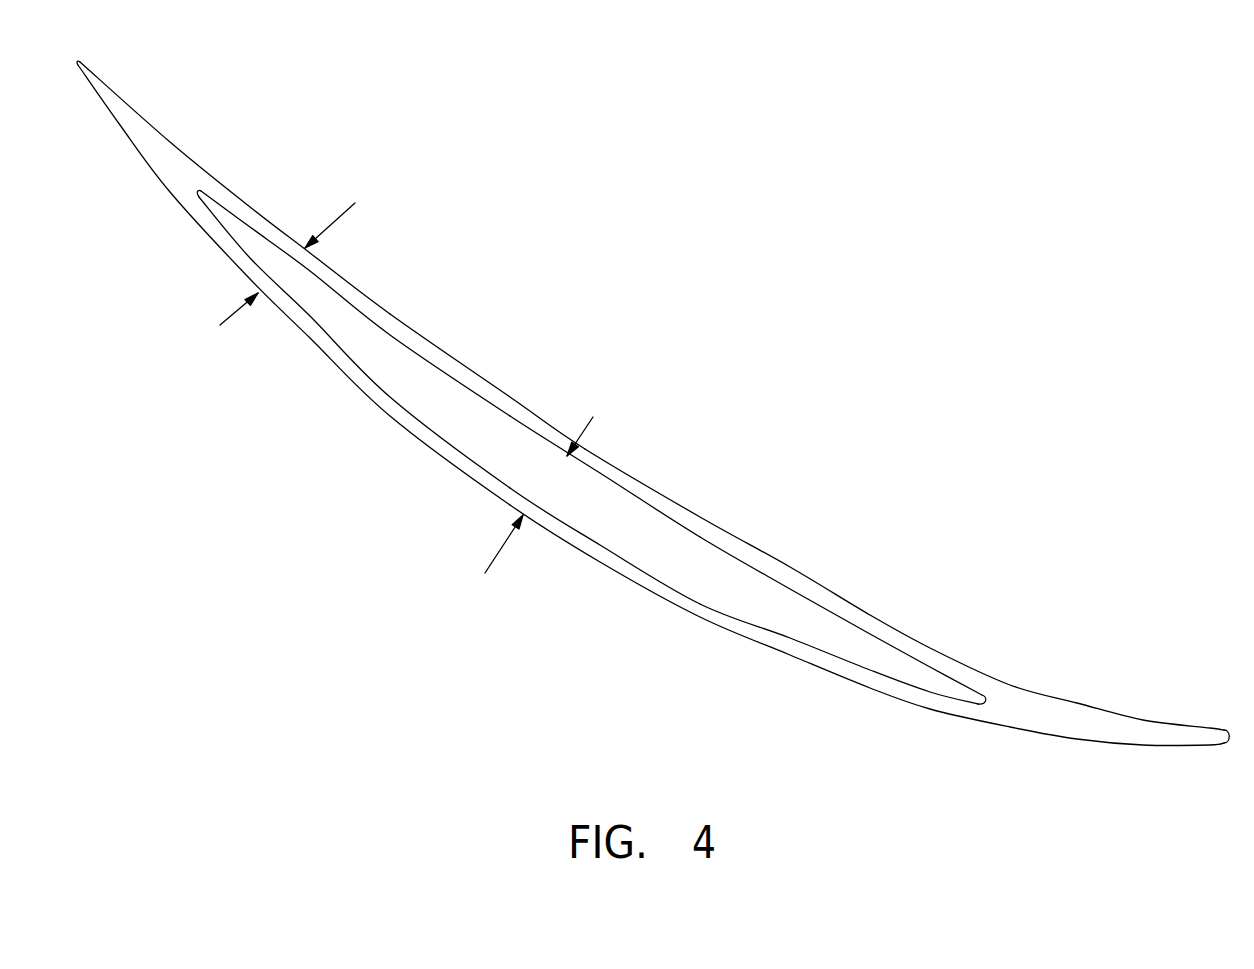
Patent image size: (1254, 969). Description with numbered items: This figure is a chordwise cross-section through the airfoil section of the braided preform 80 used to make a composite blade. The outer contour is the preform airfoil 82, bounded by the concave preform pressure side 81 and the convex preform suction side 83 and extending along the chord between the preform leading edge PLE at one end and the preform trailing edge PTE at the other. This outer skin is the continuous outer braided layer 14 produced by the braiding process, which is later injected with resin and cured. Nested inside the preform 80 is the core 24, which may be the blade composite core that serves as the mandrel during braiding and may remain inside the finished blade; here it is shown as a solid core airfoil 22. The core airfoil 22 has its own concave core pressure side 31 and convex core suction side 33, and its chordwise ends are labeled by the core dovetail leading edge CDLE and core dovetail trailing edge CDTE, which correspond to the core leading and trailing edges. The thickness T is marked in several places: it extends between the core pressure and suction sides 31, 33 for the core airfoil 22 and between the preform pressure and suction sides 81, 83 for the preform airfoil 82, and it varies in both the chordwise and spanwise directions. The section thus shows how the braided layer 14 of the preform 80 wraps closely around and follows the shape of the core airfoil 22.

The preform 80 is at (657, 397).
The preform pressure side 81 is at (350, 285).
The preform airfoil 82 is at (702, 524).
The preform suction side 83 is at (405, 431).
The continuous outer braided layer 14 is at (657, 422).
The core airfoil 22 is at (440, 370).
The core 24 is at (777, 603).
The core pressure side 31 is at (613, 485).
The core suction side 33 is at (636, 566).
The thickness T is at (340, 219).
The preform trailing edge PTE is at (79, 62).
The preform leading edge PLE is at (1229, 734).
The core dovetail trailing edge CDTE is at (198, 190).
The core dovetail leading edge CDLE is at (987, 701).